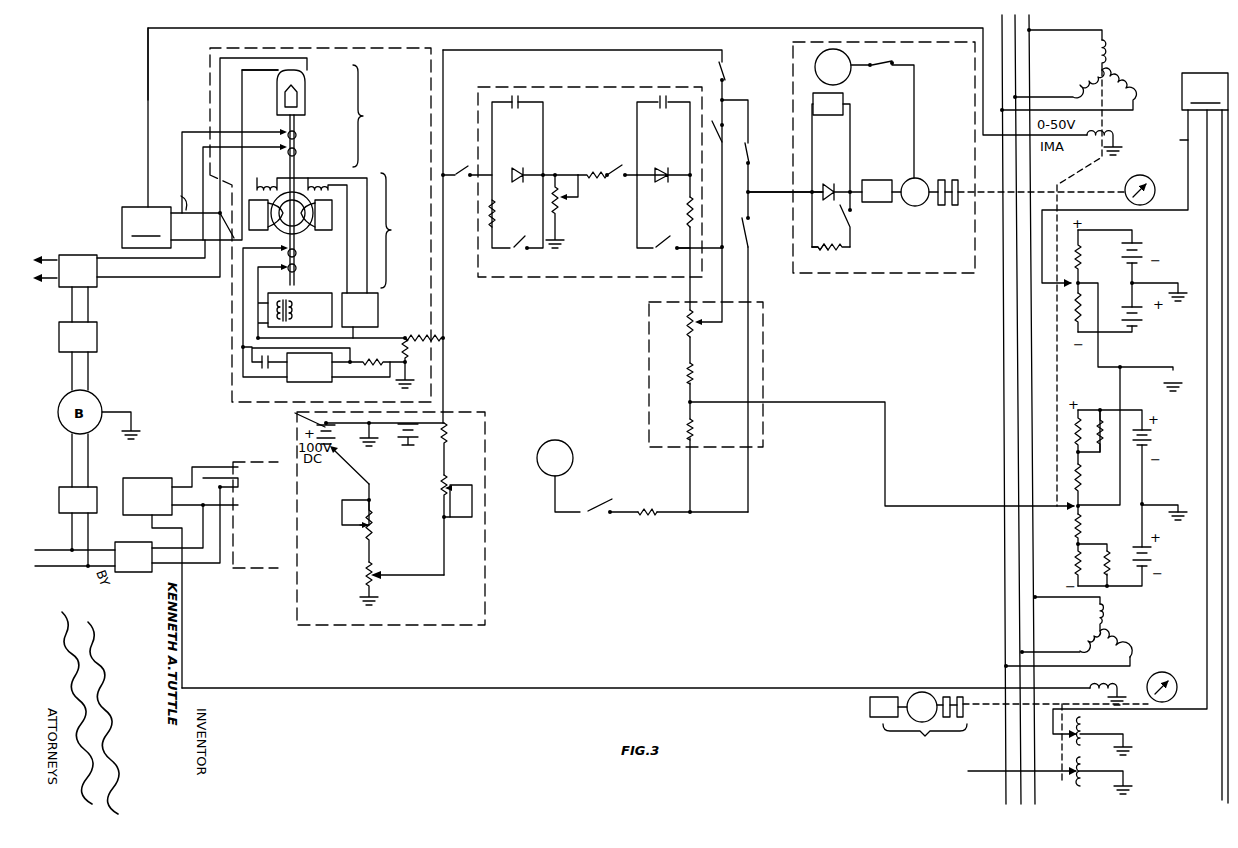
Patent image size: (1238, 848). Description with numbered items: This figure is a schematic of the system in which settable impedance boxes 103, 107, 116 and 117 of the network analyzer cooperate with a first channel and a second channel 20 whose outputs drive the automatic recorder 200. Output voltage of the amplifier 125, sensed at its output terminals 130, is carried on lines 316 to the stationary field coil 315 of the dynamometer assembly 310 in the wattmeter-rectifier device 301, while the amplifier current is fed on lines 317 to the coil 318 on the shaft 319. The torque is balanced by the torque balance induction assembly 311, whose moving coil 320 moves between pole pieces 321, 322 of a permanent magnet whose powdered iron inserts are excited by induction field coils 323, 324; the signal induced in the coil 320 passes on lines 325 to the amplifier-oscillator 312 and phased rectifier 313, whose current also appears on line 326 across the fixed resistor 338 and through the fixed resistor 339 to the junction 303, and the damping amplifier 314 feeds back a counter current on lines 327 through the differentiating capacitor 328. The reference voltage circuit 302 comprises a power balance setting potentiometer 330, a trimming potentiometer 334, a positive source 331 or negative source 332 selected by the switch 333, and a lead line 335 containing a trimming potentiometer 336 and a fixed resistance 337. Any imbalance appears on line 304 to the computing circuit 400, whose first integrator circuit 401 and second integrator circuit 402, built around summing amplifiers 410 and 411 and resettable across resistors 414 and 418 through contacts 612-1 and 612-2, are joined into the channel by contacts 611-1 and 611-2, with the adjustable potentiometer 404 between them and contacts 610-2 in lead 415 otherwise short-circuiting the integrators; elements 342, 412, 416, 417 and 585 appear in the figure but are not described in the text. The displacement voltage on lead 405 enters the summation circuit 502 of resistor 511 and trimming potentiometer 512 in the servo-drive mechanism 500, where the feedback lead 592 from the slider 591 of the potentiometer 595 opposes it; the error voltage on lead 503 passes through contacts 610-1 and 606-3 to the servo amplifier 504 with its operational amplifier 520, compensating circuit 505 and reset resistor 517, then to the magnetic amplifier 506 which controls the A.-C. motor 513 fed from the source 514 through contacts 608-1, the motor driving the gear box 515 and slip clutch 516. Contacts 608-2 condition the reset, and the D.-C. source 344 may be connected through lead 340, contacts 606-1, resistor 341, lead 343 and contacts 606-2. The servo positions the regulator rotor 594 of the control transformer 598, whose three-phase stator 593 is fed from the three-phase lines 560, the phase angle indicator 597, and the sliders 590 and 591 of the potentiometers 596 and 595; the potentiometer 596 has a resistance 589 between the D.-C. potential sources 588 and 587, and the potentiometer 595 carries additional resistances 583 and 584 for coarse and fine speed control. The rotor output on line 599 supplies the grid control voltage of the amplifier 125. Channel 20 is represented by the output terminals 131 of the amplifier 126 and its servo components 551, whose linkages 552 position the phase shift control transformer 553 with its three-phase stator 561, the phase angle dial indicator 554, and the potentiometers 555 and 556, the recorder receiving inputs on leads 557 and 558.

The channel 20 is at (261, 564).
The settable impedance box 103 is at (65, 288).
The settable impedance box 107 is at (78, 356).
The settable impedance box 116 is at (133, 557).
The settable impedance box 117 is at (78, 500).
The amplifier 125 is at (154, 215).
The amplifier 126 is at (152, 583).
The output terminals 130 is at (219, 214).
The output terminals 131 is at (204, 505).
The automatic recording apparatus 200 is at (1205, 91).
The wattmeter-rectifier device 301 is at (228, 338).
The reference voltage circuit 302 is at (351, 628).
The junction 303 is at (444, 338).
The line 304 is at (446, 307).
The dynamometer assembly 310 is at (392, 123).
The torque balance induction assembly 311 is at (419, 238).
The amplifier-oscillator 312 is at (300, 310).
The phased rectifier 313 is at (360, 315).
The damping amplifier 314 is at (338, 367).
The stationary field coil 315 is at (305, 109).
The lines 316 is at (222, 107).
The lines 317 is at (185, 163).
The coil 318 is at (300, 87).
The shaft 319 is at (297, 126).
The moving coil 320 is at (297, 268).
The pole piece 321 is at (301, 232).
The pole piece 322 is at (266, 248).
The induction field coil 323 is at (266, 184).
The induction field coil 324 is at (320, 184).
The lines 325 is at (258, 290).
The output line 326 is at (393, 358).
The lines 327 is at (252, 356).
The differentiating capacitor 328 is at (266, 370).
The power balance setting potentiometer 330 is at (366, 576).
The positive source 331 is at (295, 417).
The negative source 332 is at (398, 442).
The single pole double throw switch 333 is at (353, 476).
The trimming potentiometer 334 is at (342, 516).
The lead line 335 is at (444, 556).
The trimming potentiometer 336 is at (472, 501).
The fixed resistance 337 is at (448, 428).
The fixed resistor 338 is at (409, 352).
The fixed resistor 339 is at (421, 337).
The lead 340 is at (556, 490).
The resistor 341 is at (650, 509).
The resistor 342 is at (694, 426).
The lead 343 is at (749, 500).
The D.-C. source 344 is at (556, 441).
The analogue computing circuit 400 is at (600, 84).
The first integrator circuit 401 is at (547, 125).
The second integrator circuit 402 is at (635, 113).
The adjustable potentiometer 404 is at (567, 176).
The input lead 405 is at (689, 188).
The summing amplifier 410 is at (526, 157).
The summing amplifier 411 is at (672, 154).
The capacitor 412 is at (514, 114).
The resistor 414 is at (494, 208).
The lead 415 is at (514, 52).
The resistor 416 is at (594, 180).
The capacitor 417 is at (663, 114).
The resistor 418 is at (688, 216).
The servo-drive positioning mechanism 500 is at (901, 277).
The differential resistance voltage summation circuit 502 is at (647, 348).
The lead 503 is at (788, 191).
The servo amplifier 504 is at (854, 139).
The compensating circuit 505 is at (831, 170).
The magnetic amplifier 506 is at (881, 191).
The resistor 511 is at (695, 375).
The trimming potentiometer 512 is at (699, 330).
The A.-C. motor 513 is at (919, 192).
The A.-C. source 514 is at (815, 65).
The gear box 515 is at (942, 180).
The slip clutch 516 is at (953, 207).
The resistor 517 is at (831, 257).
The operational amplifier 520 is at (836, 181).
The servo components 551 is at (938, 755).
The linkages 552 is at (1062, 762).
The phase shift control transformer 553 is at (1139, 658).
The phase angle dial indicator 554 is at (1172, 669).
The potentiometer 555 is at (1086, 721).
The potentiometer 556 is at (1085, 761).
The recorder input lead 557 is at (1205, 548).
The recorder input lead 558 is at (1222, 586).
The three-phase lines 560 is at (1031, 525).
The three-phase stator 561 is at (1122, 617).
The additional resistance 583 is at (1092, 425).
The additional resistance 584 is at (1111, 553).
The potentiometer 585 is at (1081, 477).
The D.-C. potential source 587 is at (1145, 320).
The D.-C. potential source 588 is at (1143, 244).
The resistance 589 is at (1081, 256).
The slider 590 is at (1081, 291).
The slider 591 is at (1074, 511).
The feedback lead 592 is at (886, 457).
The three-phase stator 593 is at (1077, 83).
The induction regulator rotor 594 is at (1116, 128).
The potentiometer 595 is at (1147, 442).
The potentiometer 596 is at (1144, 272).
The phase angle indicator 597 is at (1150, 180).
The control transformer 598 is at (1087, 76).
The line 599 is at (148, 100).
The contacts 606-1 is at (598, 517).
The contacts 606-2 is at (749, 245).
The normally closed contacts 606-3 is at (750, 148).
The normally closed contacts 608-1 is at (873, 70).
The contacts 608-2 is at (851, 215).
The contacts 610-1 is at (725, 130).
The normally closed contacts 610-2 is at (721, 66).
The contacts 611-1 is at (459, 177).
The contacts 611-2 is at (609, 169).
The contacts 612-1 is at (518, 248).
The contacts 612-2 is at (660, 248).